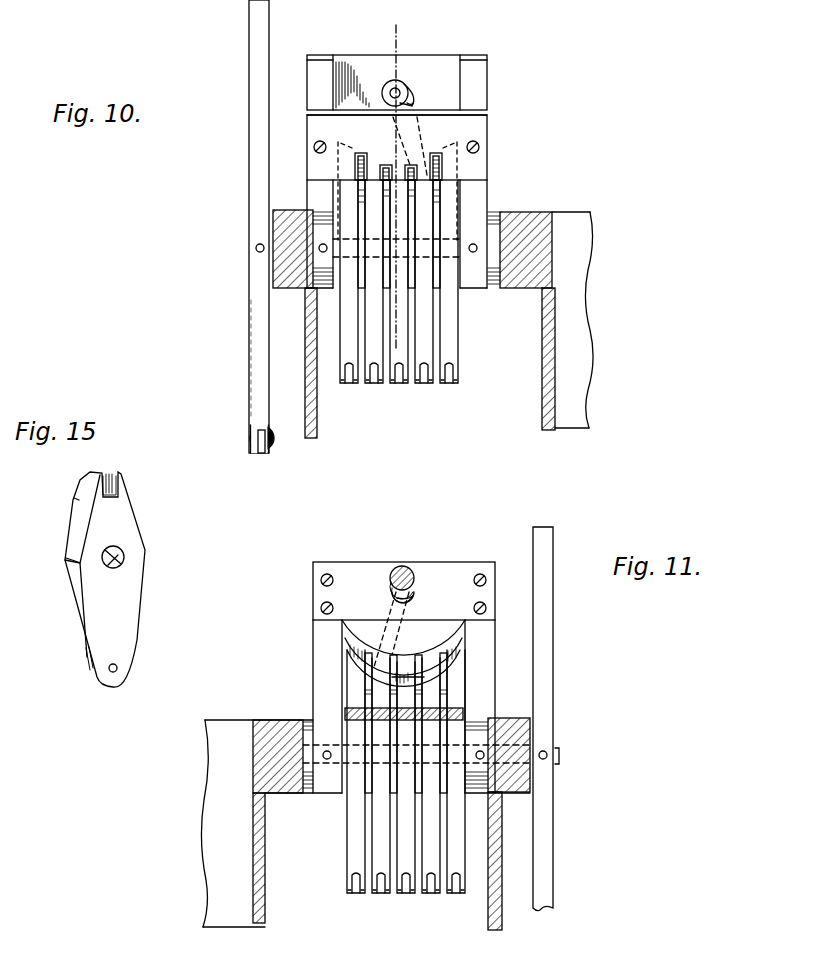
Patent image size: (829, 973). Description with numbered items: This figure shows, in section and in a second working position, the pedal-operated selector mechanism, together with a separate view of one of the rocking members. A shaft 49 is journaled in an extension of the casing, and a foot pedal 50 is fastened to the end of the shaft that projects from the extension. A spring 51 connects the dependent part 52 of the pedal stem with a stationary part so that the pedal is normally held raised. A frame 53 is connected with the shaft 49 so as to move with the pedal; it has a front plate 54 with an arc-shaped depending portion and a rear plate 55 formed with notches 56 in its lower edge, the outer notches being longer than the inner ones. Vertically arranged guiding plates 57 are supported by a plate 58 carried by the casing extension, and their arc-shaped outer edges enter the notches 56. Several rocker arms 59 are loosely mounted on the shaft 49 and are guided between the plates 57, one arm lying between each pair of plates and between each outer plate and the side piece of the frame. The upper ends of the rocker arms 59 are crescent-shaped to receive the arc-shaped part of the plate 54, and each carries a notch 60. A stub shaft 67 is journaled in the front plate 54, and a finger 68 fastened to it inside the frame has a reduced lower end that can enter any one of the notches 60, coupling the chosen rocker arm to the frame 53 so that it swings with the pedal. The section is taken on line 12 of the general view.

In FIG. 10, the center line / axis 12 is at (399, 412).
In FIG. 10, the shaft 49 is at (275, 243).
In FIG. 11, the shaft 49 is at (560, 755).
In FIG. 10, the foot pedal 50 is at (249, 52).
In FIG. 11, the foot pedal 50 is at (546, 623).
In FIG. 10, the spring 51 is at (250, 447).
In FIG. 10, the dependent part 52 is at (257, 362).
In FIG. 11, the dependent part 52 is at (547, 857).
In FIG. 10, the frame 53 is at (483, 197).
In FIG. 11, the frame 53 is at (320, 630).
In FIG. 10, the front plate 54 is at (397, 85).
In FIG. 11, the front plate 54 is at (467, 565).
In FIG. 10, the rear plate 55 is at (480, 130).
In FIG. 10, the notches 56 is at (358, 153).
In FIG. 10, the guiding plates 57 is at (366, 194).
In FIG. 11, the guiding plates 57 is at (355, 678).
In FIG. 11, the plate 58 is at (460, 712).
In FIG. 10, the rocker arms 59 is at (345, 313).
In FIG. 15, the rocker arms 59 is at (128, 598).
In FIG. 11, the rocker arms 59 is at (355, 830).
In FIG. 15, the notch 60 is at (118, 479).
In FIG. 11, the notch 60 is at (347, 645).
In FIG. 10, the stub shaft 67 is at (397, 90).
In FIG. 11, the stub shaft 67 is at (402, 566).
In FIG. 10, the finger 68 is at (414, 103).
In FIG. 11, the finger 68 is at (407, 613).